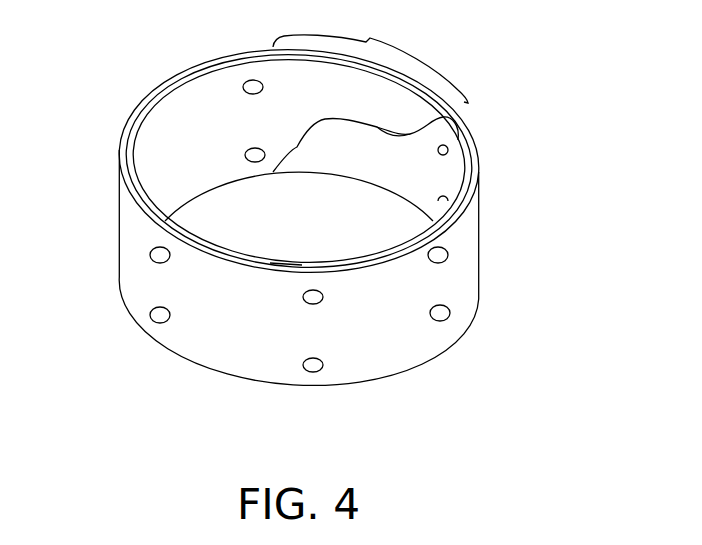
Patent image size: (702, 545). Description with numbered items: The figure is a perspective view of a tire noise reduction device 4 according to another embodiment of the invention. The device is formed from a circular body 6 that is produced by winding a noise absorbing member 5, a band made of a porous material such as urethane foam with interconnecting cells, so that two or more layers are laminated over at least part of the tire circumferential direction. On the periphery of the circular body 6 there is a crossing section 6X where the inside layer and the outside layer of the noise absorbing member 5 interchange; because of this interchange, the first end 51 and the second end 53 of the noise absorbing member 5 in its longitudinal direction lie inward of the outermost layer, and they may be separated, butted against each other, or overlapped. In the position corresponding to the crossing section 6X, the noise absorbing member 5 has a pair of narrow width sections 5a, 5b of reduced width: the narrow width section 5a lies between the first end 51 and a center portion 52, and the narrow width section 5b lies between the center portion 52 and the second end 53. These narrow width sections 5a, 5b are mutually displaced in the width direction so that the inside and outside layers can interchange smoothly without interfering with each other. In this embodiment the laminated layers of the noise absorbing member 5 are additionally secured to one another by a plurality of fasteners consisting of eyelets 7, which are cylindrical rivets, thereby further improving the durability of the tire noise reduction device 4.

The tire noise reduction device 4 is at (140, 80).
The noise absorbing member 5 is at (318, 234).
The circular body 6 is at (318, 234).
The crossing section 6X is at (370, 58).
The eyelet 7 is at (253, 82).
The first end 51 is at (185, 237).
The center portion 52 is at (228, 353).
The second end 53 is at (287, 263).
The narrow width section 5a is at (342, 110).
The narrow width section 5b is at (378, 172).